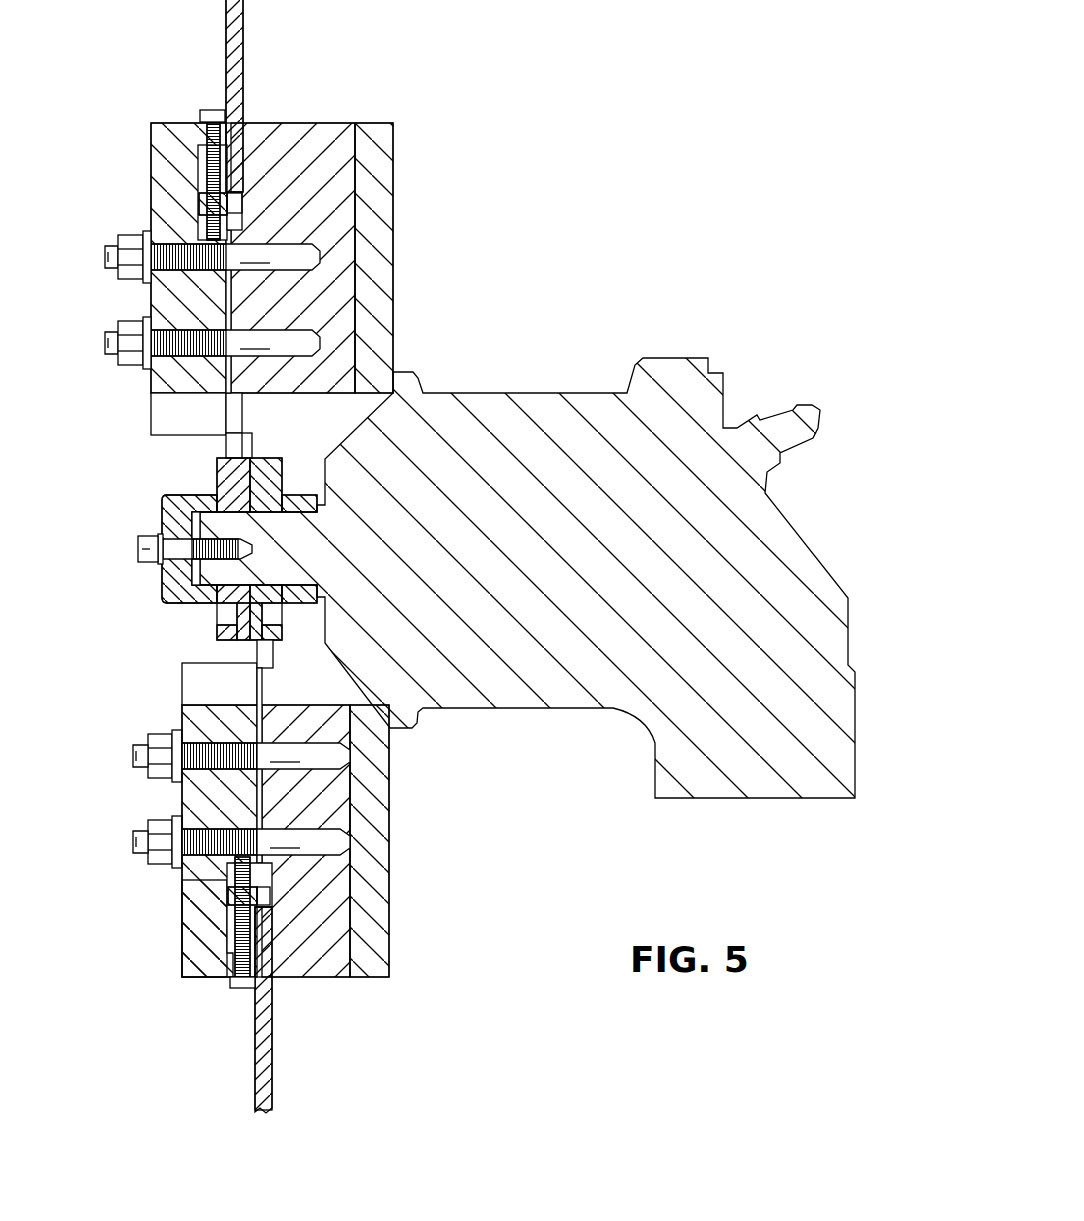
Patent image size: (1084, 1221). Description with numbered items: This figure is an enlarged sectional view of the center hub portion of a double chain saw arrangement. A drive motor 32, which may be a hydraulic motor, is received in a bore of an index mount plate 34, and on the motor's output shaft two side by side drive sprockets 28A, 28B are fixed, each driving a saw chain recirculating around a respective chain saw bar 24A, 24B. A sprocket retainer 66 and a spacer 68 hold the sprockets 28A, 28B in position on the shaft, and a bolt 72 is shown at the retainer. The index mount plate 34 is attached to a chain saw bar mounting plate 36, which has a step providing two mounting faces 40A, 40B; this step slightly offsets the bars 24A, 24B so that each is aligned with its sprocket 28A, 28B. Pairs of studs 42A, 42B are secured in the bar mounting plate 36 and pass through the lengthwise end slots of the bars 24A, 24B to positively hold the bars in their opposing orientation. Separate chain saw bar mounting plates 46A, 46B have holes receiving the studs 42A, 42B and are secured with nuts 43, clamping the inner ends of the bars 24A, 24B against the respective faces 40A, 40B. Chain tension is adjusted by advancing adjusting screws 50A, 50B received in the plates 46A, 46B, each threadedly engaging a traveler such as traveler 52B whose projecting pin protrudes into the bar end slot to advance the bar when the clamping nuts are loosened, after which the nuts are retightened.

The chain saw bar 24A is at (238, 68).
The chain saw bar 24B is at (264, 1022).
The drive sprocket 28A is at (218, 607).
The drive sprocket 28B is at (268, 458).
The drive motor 32 is at (457, 712).
The index mount plate 34 is at (386, 152).
The chain saw bar mounting plate 36 is at (323, 982).
The mounting face 40A is at (218, 360).
The mounting face 40B is at (260, 786).
The studs 42A is at (105, 256).
The studs 42B is at (133, 752).
The nuts 43 is at (130, 273).
The chain saw bar mounting plate 46A is at (158, 160).
The chain saw bar mounting plate 46B is at (180, 953).
The adjusting screw 50A is at (213, 112).
The adjusting screw 50B is at (230, 984).
The traveler 52B is at (196, 200).
The sprocket retainer 66 is at (162, 525).
The spacer 68 is at (300, 496).
The set bolt 72 is at (138, 552).